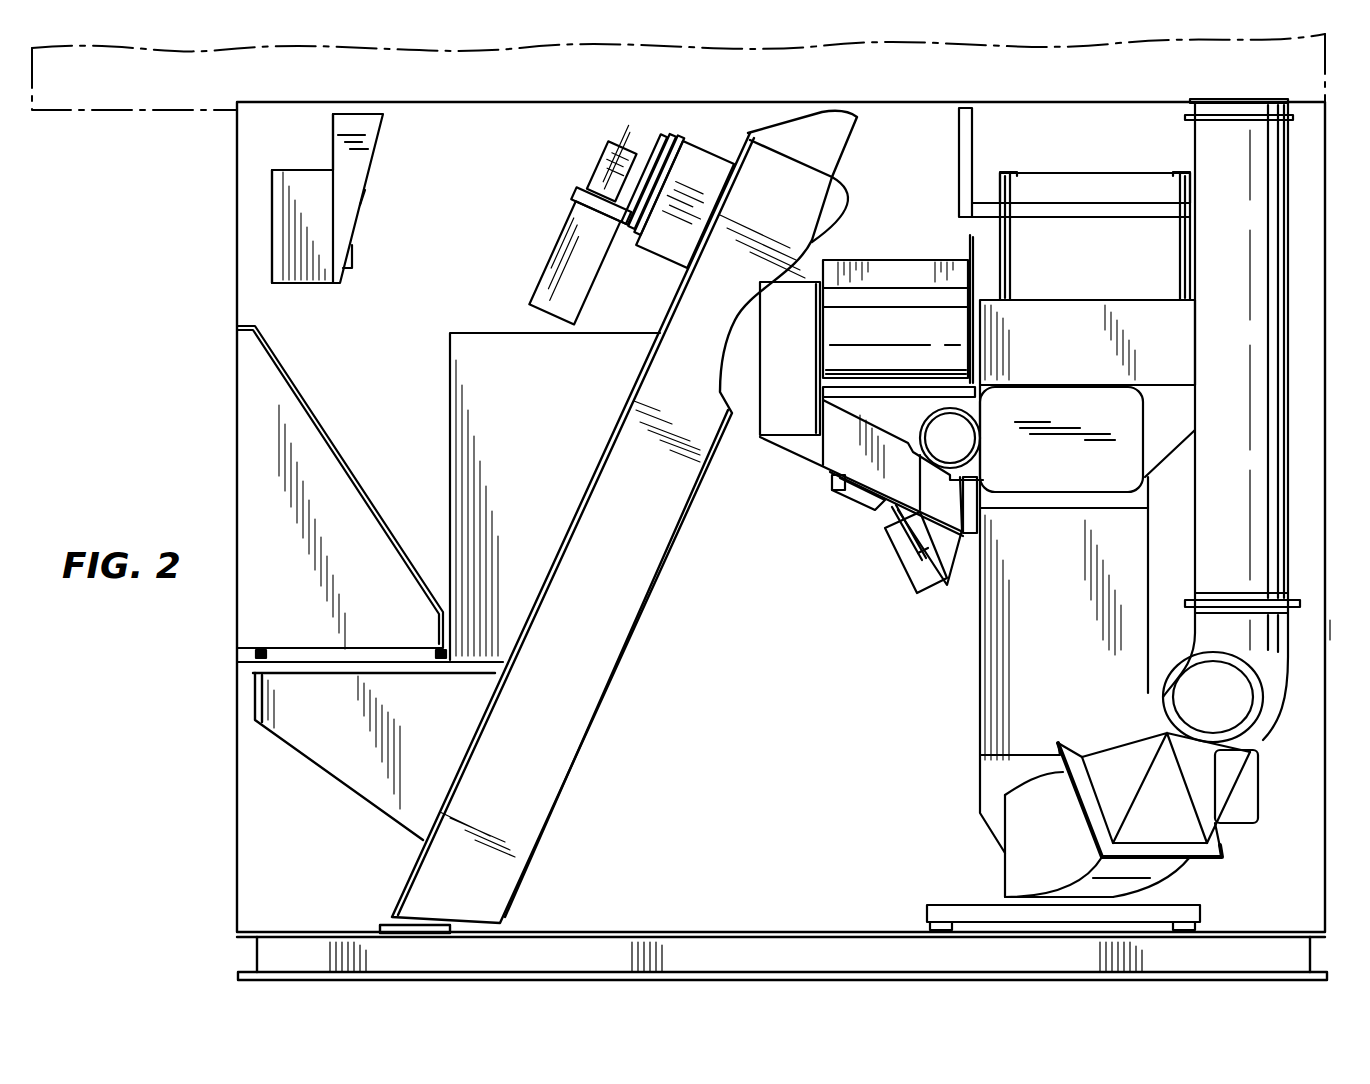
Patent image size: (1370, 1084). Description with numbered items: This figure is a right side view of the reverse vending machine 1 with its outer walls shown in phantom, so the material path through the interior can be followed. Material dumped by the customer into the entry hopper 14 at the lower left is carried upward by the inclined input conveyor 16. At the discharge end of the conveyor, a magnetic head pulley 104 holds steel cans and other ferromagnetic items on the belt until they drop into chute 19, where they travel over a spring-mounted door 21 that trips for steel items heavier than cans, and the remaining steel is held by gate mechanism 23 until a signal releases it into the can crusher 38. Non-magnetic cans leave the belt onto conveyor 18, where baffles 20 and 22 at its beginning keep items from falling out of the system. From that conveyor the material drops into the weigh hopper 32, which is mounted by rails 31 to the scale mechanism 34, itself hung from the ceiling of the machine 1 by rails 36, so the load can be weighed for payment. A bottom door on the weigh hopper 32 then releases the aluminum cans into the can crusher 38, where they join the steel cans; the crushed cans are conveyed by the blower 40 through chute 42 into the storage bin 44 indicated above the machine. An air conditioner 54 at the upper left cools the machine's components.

The reverse vending machine 1 is at (1333, 344).
The entry hopper 14 is at (329, 731).
The input conveyor 16 is at (518, 781).
The conveyor 18 is at (904, 343).
The chute 19 is at (790, 388).
The baffle 20 is at (906, 288).
The spring-mounted door 21 is at (853, 500).
The baffle 22 is at (970, 243).
The gate mechanism 23 is at (915, 573).
The rails 31 is at (1010, 262).
The weigh hopper 32 is at (1062, 353).
The scale mechanism 34 is at (1108, 200).
The rails 36 is at (972, 138).
The can crusher 38 is at (1050, 561).
The blower 40 is at (995, 768).
The chute 42 is at (1233, 353).
The storage bin 44 is at (1325, 78).
The air conditioner 54 is at (305, 264).
The magnetic head pulley 104 is at (840, 204).